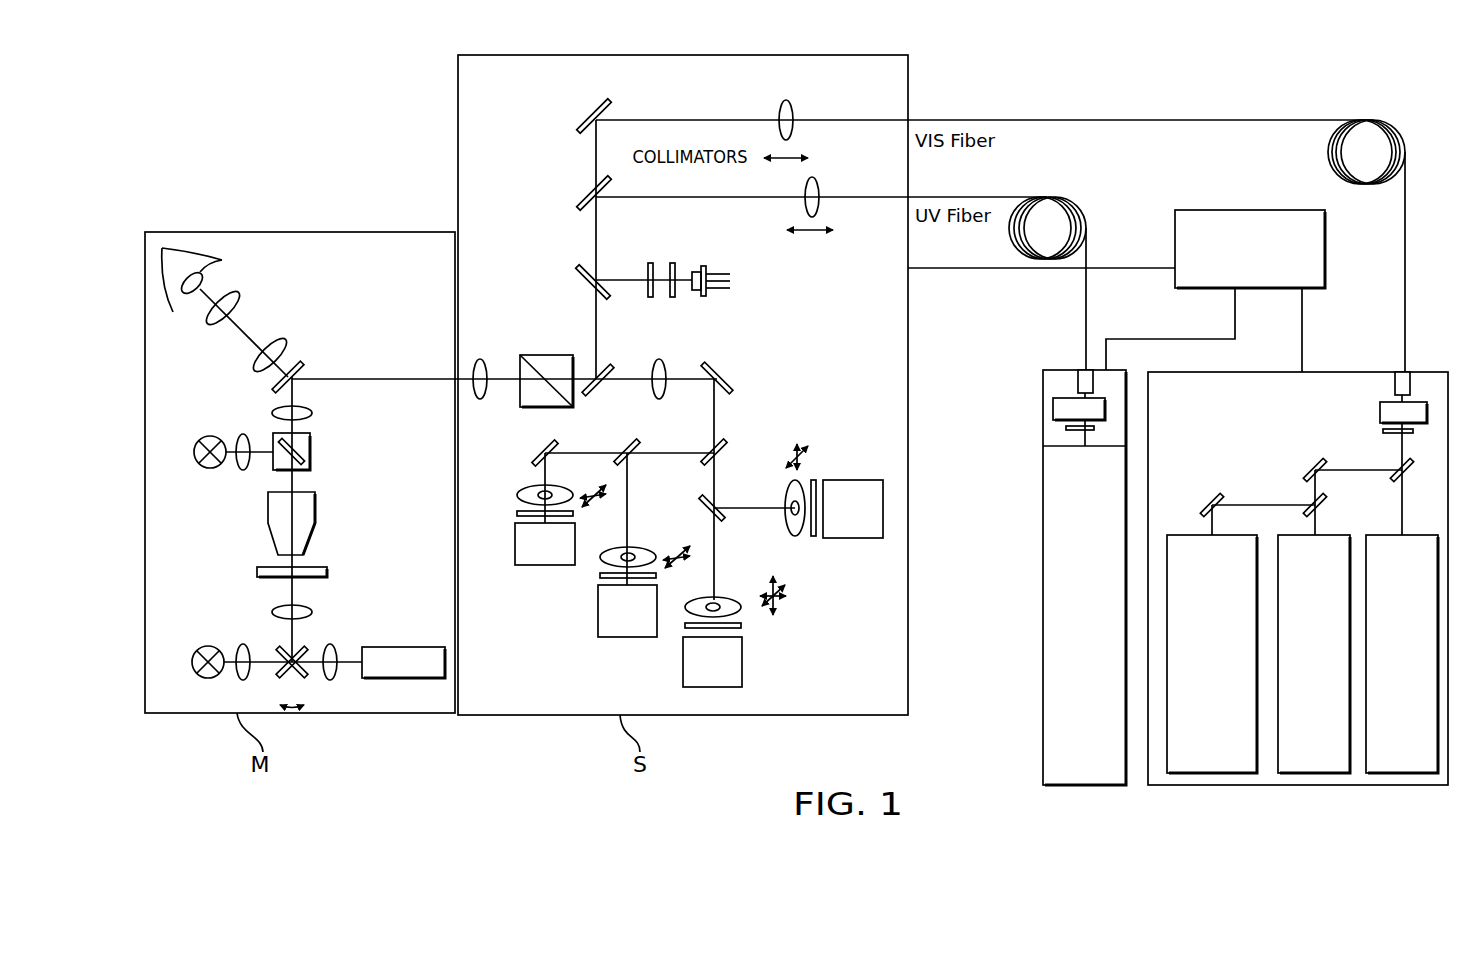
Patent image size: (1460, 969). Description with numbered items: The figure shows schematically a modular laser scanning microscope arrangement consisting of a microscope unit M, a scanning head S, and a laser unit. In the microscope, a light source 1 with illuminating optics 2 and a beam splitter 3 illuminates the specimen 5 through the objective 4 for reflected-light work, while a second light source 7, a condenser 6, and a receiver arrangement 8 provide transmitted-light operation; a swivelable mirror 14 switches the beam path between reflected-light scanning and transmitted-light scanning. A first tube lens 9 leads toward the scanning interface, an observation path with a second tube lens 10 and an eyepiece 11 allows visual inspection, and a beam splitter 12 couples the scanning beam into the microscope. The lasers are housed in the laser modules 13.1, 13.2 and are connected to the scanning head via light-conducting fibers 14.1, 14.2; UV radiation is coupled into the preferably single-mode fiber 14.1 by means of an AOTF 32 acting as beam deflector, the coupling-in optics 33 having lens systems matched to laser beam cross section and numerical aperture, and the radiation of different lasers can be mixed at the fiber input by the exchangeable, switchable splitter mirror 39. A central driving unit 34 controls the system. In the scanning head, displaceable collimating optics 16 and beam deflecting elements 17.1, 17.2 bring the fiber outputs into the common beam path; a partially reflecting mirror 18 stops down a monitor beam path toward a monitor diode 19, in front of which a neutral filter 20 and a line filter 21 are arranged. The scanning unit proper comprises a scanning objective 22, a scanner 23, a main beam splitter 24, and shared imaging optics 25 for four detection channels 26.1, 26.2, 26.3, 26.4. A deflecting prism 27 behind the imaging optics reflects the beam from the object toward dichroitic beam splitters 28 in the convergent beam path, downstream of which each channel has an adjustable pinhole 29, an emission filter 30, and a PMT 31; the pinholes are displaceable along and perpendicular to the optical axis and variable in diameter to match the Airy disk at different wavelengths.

The light source 1 is at (208, 436).
The illuminating optics 2 is at (245, 471).
The beam splitter 3 is at (312, 452).
The objective 4 is at (318, 520).
The specimen 5 is at (328, 572).
The condenser 6 is at (313, 610).
The light source 7 is at (198, 652).
The receiver arrangement 8 is at (396, 647).
The first tube lens 9 is at (314, 413).
The second tube lens 10 is at (290, 342).
The eyepiece 11 is at (240, 296).
The beam splitter 12 is at (308, 369).
The laser module 13.1 is at (1043, 505).
The laser module 13.2 is at (1265, 785).
The swivelable mirror 14 is at (302, 677).
The light-conducting fiber 14.1 is at (1015, 197).
The light-conducting fiber 14.2 is at (1132, 120).
The collimating optics 16 is at (790, 104).
The beam deflecting element 17.1 is at (582, 190).
The beam deflecting element 17.2 is at (590, 104).
The partially reflecting mirror 18 is at (577, 265).
The monitor diode 19 is at (722, 270).
The neutral filter 20 is at (676, 268).
The line filter 21 is at (649, 298).
The scanning objective 22 is at (484, 358).
The scanner 23 is at (518, 409).
The main beam splitter 24 is at (594, 393).
The imaging optics 25 is at (666, 392).
The detection channel 26.1 is at (726, 527).
The detection channel 26.2 is at (652, 494).
The detection channel 26.3 is at (567, 466).
The detection channel 26.4 is at (757, 499).
The deflecting prism 27 is at (724, 372).
The dichroitic beam splitter 28 is at (630, 440).
The adjustable pinhole 29 is at (517, 497).
The emission filter 30 is at (515, 514).
The PMT 31 is at (515, 555).
The AOTF 32 is at (1050, 412).
The coupling-in optics 33 is at (1076, 370).
The central driving unit 34 is at (1232, 210).
The beam splitter 39 is at (1305, 465).